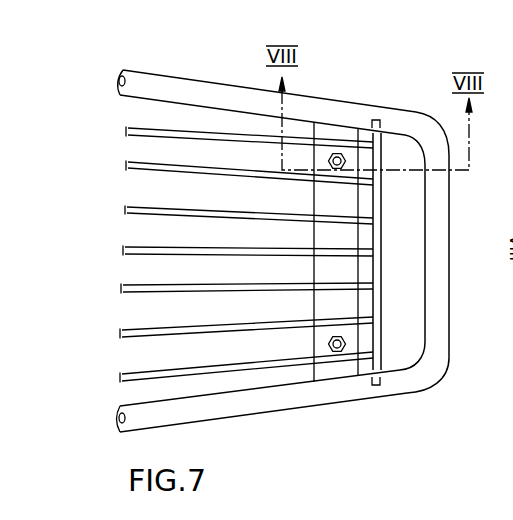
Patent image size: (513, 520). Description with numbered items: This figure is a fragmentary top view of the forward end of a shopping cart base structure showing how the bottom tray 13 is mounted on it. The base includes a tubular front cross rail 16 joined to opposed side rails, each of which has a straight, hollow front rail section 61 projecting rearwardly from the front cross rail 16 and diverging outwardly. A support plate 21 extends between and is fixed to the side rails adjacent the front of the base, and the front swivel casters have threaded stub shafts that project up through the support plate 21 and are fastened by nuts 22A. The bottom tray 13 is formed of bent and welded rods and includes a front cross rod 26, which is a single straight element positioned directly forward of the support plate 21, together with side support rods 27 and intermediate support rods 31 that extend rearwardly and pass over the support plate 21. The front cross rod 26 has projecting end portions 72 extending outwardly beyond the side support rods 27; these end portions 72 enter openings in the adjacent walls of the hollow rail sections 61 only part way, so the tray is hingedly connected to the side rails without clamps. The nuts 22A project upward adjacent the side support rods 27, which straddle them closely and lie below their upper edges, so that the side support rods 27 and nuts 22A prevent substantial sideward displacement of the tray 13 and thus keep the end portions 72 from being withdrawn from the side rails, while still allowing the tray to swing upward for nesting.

The side support rods 27 is at (150, 133).
The front rail section 61 is at (210, 93).
The bottom tray 13 is at (150, 162).
The intermediate support rods 31 is at (145, 248).
The nuts 22A is at (337, 152).
The projecting end portions 72 is at (382, 135).
The front cross rail 16 is at (438, 215).
The support plate 21 is at (328, 309).
The front cross rod 26 is at (377, 331).